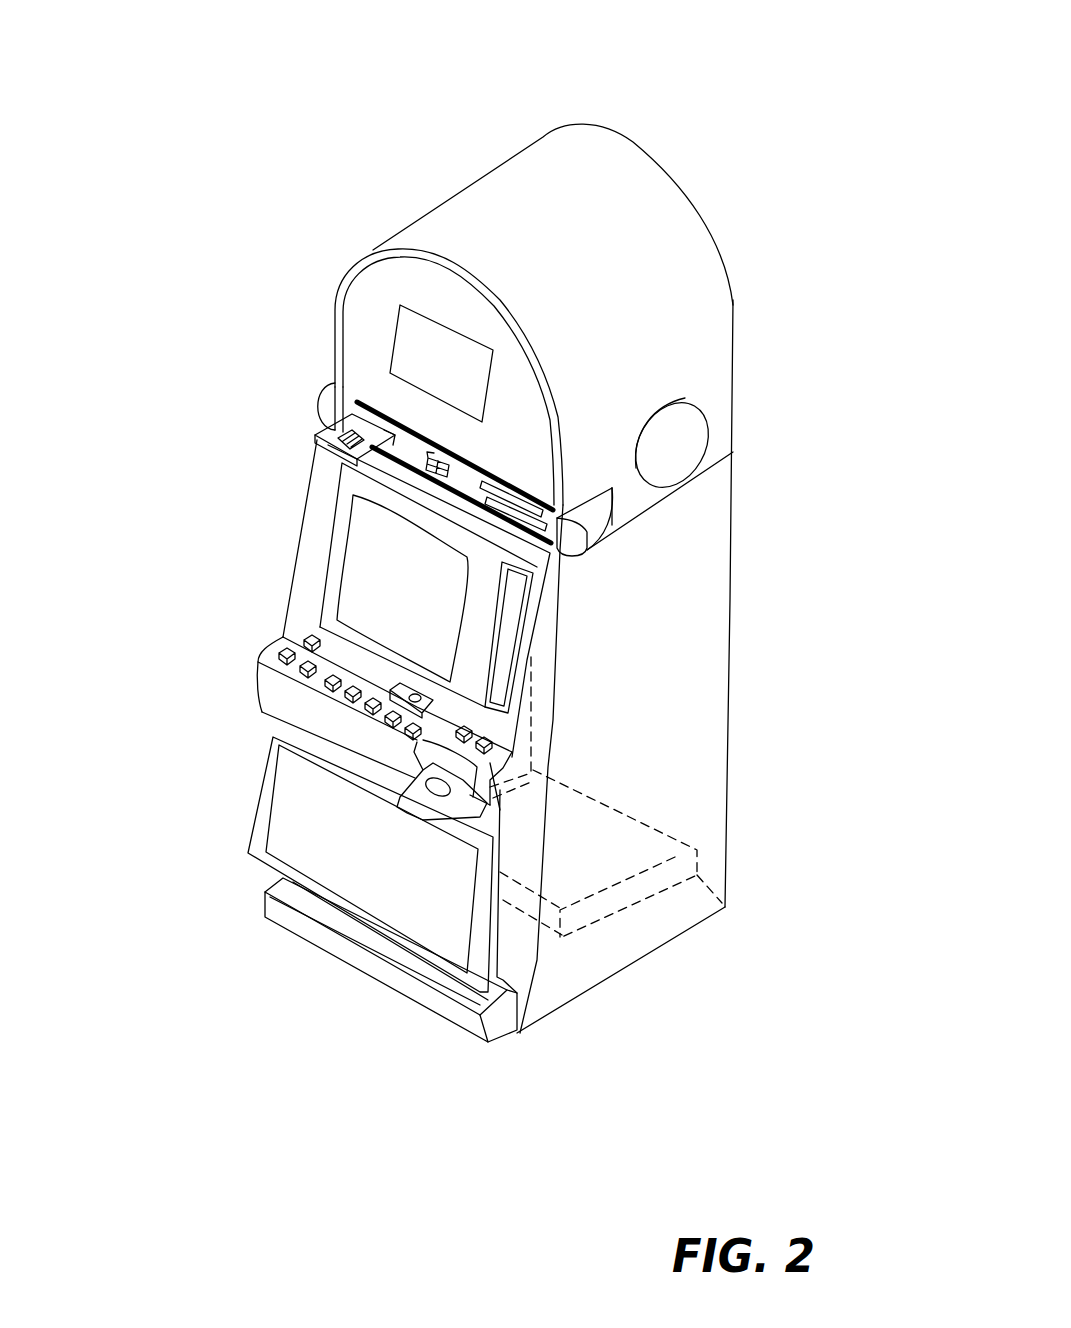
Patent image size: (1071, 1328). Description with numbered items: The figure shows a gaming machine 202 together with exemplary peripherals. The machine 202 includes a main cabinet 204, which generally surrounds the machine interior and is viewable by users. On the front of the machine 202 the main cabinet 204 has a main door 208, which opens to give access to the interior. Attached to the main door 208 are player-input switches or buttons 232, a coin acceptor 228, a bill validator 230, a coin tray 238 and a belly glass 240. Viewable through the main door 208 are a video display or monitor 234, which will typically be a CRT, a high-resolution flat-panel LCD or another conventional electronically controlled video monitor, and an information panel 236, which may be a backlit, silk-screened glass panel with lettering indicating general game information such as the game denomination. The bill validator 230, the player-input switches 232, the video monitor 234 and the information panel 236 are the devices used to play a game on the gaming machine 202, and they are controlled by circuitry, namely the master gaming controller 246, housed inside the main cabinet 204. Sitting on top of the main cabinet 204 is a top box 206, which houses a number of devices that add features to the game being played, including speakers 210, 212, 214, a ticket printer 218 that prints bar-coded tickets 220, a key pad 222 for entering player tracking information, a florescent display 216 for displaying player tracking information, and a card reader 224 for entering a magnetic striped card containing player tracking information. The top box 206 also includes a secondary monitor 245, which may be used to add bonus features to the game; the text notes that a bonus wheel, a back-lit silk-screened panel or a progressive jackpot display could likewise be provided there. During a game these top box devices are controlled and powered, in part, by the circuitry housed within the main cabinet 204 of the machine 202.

The gaming machine 202 is at (695, 106).
The main cabinet 204 is at (657, 750).
The top box 206 is at (623, 300).
The main door 208 is at (510, 928).
The speaker 210 is at (673, 443).
The speaker 212 is at (570, 532).
The speaker 214 is at (330, 386).
The florescent display 216 is at (537, 505).
The ticket printer 218 is at (330, 413).
The bar-coded tickets 220 is at (330, 438).
The key pad 222 is at (430, 455).
The card reader 224 is at (587, 553).
The coin acceptor 228 is at (432, 702).
The bill validator 230 is at (490, 807).
The player-input switches or buttons 232 is at (347, 695).
The video display or monitor 234 is at (353, 590).
The information panel 236 is at (513, 610).
The coin tray 238 is at (497, 1023).
The belly glass 240 is at (300, 823).
The secondary monitor 245 is at (439, 372).
The master gaming controller 246 is at (650, 843).